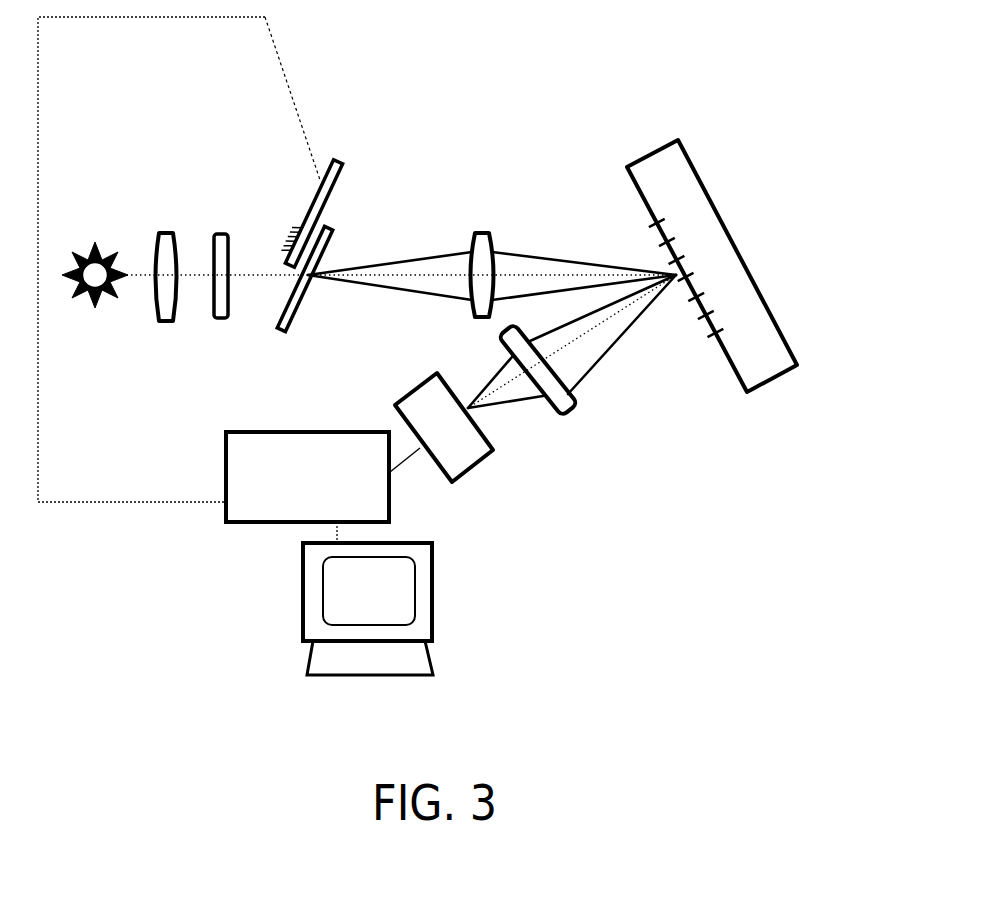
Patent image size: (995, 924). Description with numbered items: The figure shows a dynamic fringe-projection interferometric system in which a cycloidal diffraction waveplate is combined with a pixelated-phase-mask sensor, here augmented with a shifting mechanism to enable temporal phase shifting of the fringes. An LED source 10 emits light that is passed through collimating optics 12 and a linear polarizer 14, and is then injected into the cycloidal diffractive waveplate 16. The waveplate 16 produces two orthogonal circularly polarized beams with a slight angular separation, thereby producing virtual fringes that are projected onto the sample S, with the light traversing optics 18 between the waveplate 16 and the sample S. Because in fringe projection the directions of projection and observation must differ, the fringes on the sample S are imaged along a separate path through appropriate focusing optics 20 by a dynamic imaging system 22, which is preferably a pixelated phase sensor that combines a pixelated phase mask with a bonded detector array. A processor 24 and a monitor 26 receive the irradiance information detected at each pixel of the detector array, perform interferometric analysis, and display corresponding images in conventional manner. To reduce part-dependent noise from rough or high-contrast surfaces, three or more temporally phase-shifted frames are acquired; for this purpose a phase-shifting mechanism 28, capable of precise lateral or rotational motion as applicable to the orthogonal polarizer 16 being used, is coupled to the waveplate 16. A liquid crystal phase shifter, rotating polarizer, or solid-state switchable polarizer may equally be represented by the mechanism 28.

The LED source 10 is at (95, 250).
The collimating optics 12 is at (160, 322).
The linear polarizer 14 is at (220, 233).
The cycloidal diffractive waveplate 16 is at (334, 242).
The objective lens 18 is at (477, 232).
The focusing optics 20 is at (567, 407).
The dynamic imaging system 22 is at (473, 453).
The processor 24 is at (223, 512).
The monitor 26 is at (302, 605).
The phase-shifting mechanism 28 is at (333, 157).
The sample S is at (688, 158).